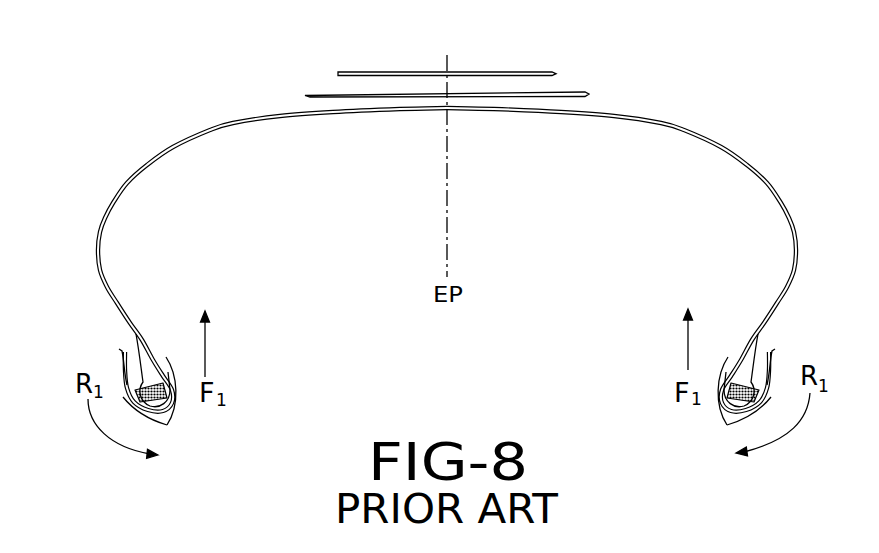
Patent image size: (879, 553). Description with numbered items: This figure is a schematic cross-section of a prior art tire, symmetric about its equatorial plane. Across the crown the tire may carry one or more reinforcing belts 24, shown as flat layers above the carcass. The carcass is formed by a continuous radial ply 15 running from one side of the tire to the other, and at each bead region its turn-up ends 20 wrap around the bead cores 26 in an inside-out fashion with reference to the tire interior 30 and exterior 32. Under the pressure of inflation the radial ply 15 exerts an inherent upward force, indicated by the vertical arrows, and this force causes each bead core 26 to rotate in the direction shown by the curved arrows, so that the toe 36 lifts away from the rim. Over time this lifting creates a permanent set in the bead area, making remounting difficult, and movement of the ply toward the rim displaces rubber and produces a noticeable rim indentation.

The radial ply 15 is at (106, 216).
The reinforcing belt 24 is at (328, 91).
The exterior 32 is at (68, 207).
The interior 30 is at (190, 273).
The bead core 26 is at (143, 382).
The turn-up end 20 is at (118, 352).
The toe 36 is at (167, 425).